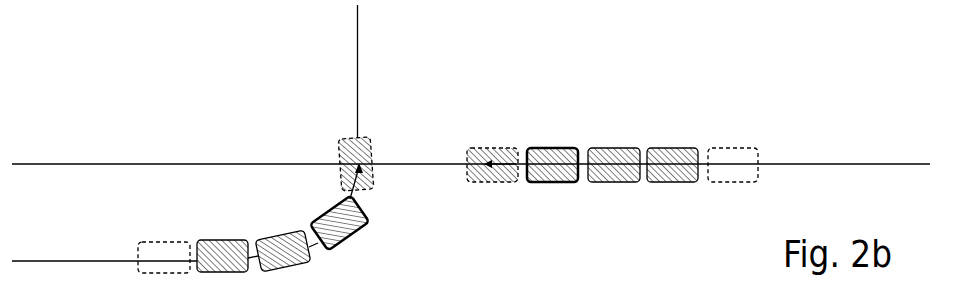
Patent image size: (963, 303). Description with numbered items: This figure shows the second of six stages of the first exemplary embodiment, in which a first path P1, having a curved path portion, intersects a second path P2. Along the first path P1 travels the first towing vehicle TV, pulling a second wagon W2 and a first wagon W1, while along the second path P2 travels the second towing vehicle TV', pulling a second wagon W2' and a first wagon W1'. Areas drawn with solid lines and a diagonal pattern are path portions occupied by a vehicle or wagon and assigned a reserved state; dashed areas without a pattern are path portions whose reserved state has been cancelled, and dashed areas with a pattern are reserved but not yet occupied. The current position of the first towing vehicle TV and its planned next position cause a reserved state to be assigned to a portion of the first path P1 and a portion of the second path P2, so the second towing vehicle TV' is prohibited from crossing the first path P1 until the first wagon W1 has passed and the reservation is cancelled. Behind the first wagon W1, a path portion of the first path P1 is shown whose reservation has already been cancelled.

The first path P1 is at (104, 248).
The second path P2 is at (471, 151).
The first wagon W1 is at (222, 256).
The second wagon W2 is at (283, 251).
The first towing vehicle TV is at (339, 223).
The second towing vehicle TV' is at (552, 165).
The second wagon W2' is at (614, 165).
The first wagon W1' is at (672, 165).